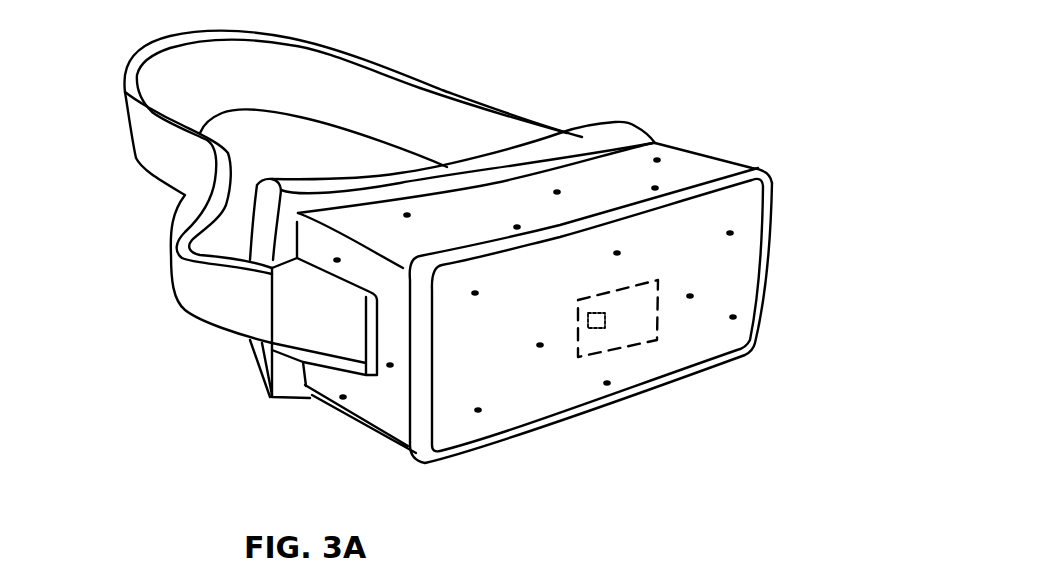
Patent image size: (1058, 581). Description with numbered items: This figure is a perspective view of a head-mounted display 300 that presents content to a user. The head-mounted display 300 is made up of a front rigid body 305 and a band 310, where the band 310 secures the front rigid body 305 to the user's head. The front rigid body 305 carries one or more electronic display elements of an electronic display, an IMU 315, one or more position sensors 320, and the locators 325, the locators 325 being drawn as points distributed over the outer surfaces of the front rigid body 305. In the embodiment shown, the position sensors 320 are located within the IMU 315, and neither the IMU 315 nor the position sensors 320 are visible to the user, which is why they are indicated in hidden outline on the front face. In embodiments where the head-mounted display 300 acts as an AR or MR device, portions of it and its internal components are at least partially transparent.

The head-mounted display 300 is at (475, 274).
The front rigid body 305 is at (760, 170).
The band 310 is at (442, 90).
The IMU 315 is at (658, 340).
The position sensors 320 is at (597, 328).
The locators 325 is at (690, 295).